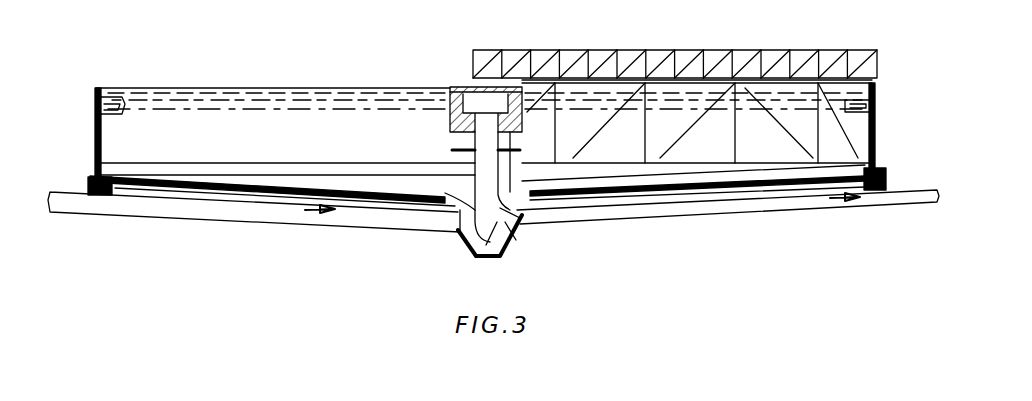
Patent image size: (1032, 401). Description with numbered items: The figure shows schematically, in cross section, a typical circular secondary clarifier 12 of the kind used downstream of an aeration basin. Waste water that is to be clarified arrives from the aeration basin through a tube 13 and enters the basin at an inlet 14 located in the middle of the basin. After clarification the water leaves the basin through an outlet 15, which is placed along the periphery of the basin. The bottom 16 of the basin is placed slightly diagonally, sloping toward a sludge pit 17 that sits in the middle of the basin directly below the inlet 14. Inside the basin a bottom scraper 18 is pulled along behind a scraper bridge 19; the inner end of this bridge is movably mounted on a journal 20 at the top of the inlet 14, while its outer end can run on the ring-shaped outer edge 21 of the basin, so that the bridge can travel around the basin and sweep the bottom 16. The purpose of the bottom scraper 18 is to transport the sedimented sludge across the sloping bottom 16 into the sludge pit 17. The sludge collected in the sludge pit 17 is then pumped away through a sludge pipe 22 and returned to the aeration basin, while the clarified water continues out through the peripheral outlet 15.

The circular secondary clarifier 12 is at (233, 80).
The tube 13 is at (240, 215).
The inlet 14 is at (465, 88).
The outlet 15 is at (104, 96).
The bottom 16 is at (224, 178).
The sludge pit 17 is at (472, 258).
The bottom scraper 18 is at (752, 196).
The scraper bridge 19 is at (675, 52).
The journal 20 is at (483, 81).
The ring-shaped outer edge 21 is at (877, 91).
The sludge pipe 22 is at (675, 206).